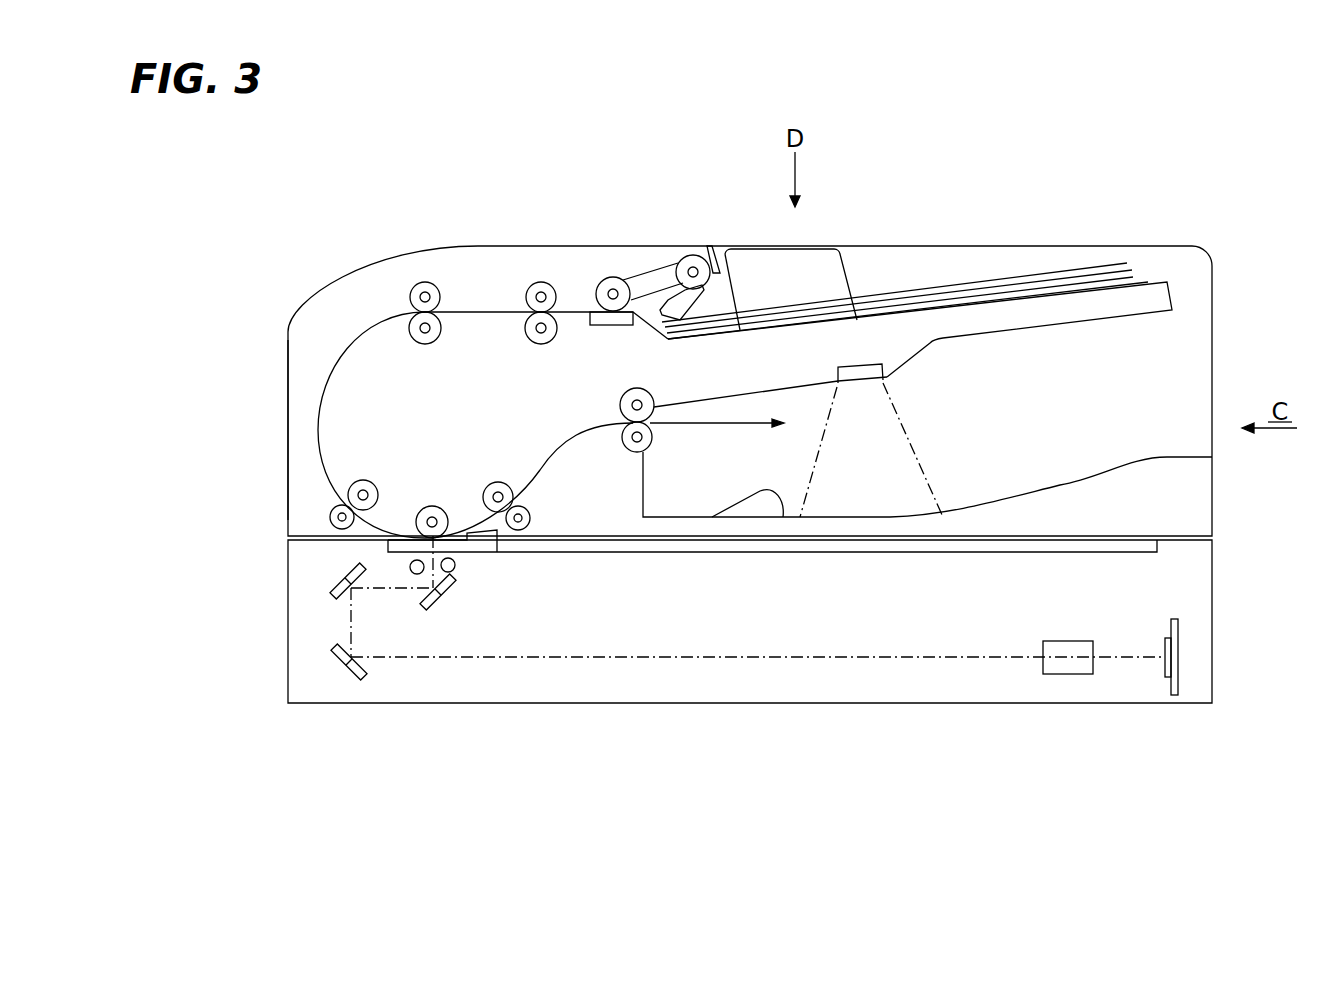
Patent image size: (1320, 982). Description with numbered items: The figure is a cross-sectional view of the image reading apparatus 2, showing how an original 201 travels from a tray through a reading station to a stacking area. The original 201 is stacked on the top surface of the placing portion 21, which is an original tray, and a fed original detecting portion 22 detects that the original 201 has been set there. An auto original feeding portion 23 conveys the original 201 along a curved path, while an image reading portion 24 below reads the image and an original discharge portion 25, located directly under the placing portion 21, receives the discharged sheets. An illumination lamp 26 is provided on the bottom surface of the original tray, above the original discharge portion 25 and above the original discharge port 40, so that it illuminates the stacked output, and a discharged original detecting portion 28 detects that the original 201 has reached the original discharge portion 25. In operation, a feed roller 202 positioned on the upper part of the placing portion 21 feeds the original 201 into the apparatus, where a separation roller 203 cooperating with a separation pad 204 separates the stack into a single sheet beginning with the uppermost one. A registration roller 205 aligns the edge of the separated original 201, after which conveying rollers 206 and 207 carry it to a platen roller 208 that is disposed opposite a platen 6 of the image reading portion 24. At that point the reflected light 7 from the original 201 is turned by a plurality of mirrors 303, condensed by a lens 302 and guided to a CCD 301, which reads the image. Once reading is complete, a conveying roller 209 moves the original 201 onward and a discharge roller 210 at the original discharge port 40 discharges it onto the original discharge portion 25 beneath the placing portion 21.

The image reading apparatus 2 is at (446, 226).
The platen 6 is at (400, 548).
The reflected light 7 is at (682, 655).
The placing portion 21 is at (1153, 282).
The fed original detecting portion 22 is at (685, 304).
The auto original feeding portion 23 is at (303, 461).
The image reading portion 24 is at (307, 608).
The original discharge portion 25 is at (1043, 493).
The illumination lamp 26 is at (861, 385).
The discharged original detecting portion 28 is at (755, 502).
The original discharge port 40 is at (651, 430).
The original 201 is at (995, 282).
The feed roller 202 is at (685, 256).
The separation roller 203 is at (621, 279).
The separation pad 204 is at (607, 326).
The registration roller 205 is at (538, 342).
The conveying roller 206 is at (423, 342).
The conveying roller 207 is at (370, 485).
The platen roller 208 is at (432, 513).
The conveying roller 209 is at (493, 489).
The discharge roller 210 is at (639, 396).
The CCD 301 is at (1164, 645).
The lens 302 is at (1060, 640).
The mirrors 303 is at (340, 578).